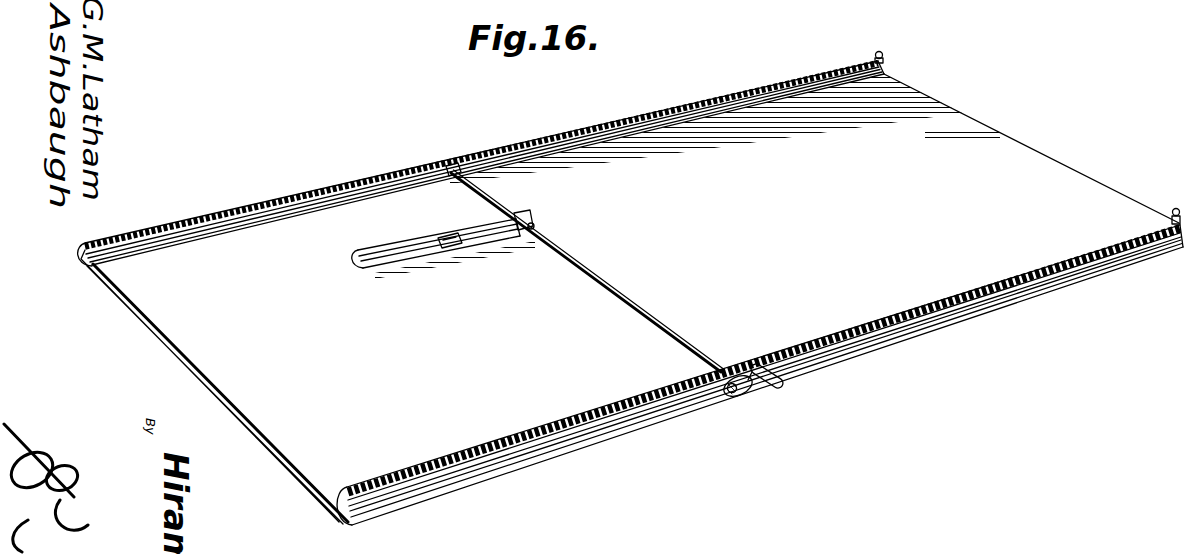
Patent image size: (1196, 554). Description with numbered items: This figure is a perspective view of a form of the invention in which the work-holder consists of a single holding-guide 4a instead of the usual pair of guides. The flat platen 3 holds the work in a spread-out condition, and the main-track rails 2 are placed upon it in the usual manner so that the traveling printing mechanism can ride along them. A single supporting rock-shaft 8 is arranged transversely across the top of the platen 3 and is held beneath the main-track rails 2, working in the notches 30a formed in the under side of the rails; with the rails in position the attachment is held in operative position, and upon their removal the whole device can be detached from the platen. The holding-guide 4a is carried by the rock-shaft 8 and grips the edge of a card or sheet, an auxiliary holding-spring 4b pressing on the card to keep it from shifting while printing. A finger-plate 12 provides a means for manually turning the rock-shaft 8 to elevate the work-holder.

The main-track rails 2 is at (599, 132).
The flat platen 3 is at (630, 299).
The holding-guide 4a is at (392, 251).
The auxiliary holding-spring 4b is at (447, 238).
The supporting rock-shaft 8 is at (602, 284).
The finger-plate 12 is at (774, 401).
The notches 30a is at (709, 423).